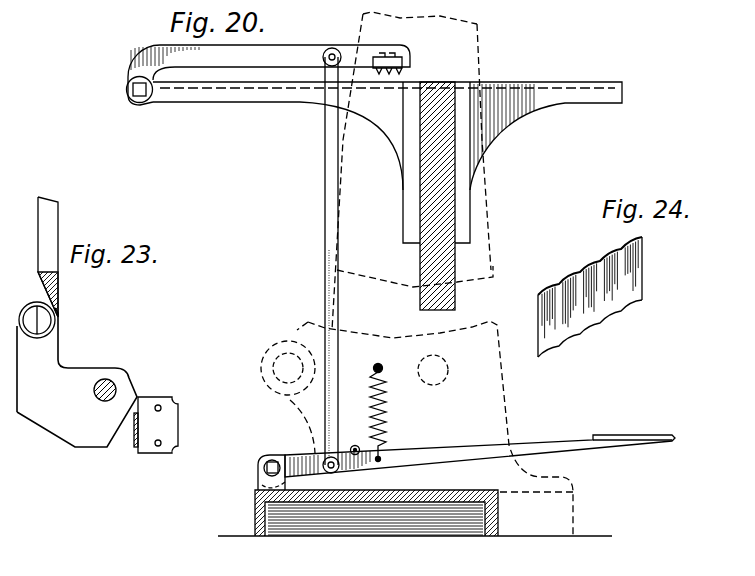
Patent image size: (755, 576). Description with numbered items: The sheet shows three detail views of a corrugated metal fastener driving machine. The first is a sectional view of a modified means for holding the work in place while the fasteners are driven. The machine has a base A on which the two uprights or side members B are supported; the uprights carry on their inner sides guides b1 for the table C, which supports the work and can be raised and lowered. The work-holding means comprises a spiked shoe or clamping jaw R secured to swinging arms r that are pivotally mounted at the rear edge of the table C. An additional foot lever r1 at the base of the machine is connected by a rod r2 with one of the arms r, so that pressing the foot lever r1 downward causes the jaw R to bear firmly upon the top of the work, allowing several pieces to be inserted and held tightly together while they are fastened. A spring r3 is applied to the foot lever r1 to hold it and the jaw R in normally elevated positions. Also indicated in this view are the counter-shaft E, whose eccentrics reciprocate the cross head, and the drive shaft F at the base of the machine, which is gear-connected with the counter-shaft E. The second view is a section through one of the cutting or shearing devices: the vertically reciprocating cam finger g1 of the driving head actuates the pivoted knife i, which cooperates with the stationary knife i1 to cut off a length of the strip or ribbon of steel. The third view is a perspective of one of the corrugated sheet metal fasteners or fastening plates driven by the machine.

In FIG. 20, the swinging arm r is at (265, 55).
In FIG. 20, the spiked shoe or clamping jaw R is at (402, 65).
In FIG. 20, the upright or side member B is at (475, 42).
In FIG. 20, the table C is at (577, 93).
In FIG. 20, the rod r2 is at (332, 187).
In FIG. 20, the guide b1 is at (435, 217).
In FIG. 20, the drive shaft F is at (293, 283).
In FIG. 20, the counter-shaft E is at (488, 329).
In FIG. 20, the spring r3 is at (388, 407).
In FIG. 20, the foot lever r1 is at (548, 450).
In FIG. 20, the base A is at (352, 518).
In FIG. 23, the cam finger g1 is at (50, 237).
In FIG. 23, the pivoted knife i is at (70, 385).
In FIG. 23, the stationary knife i1 is at (167, 428).